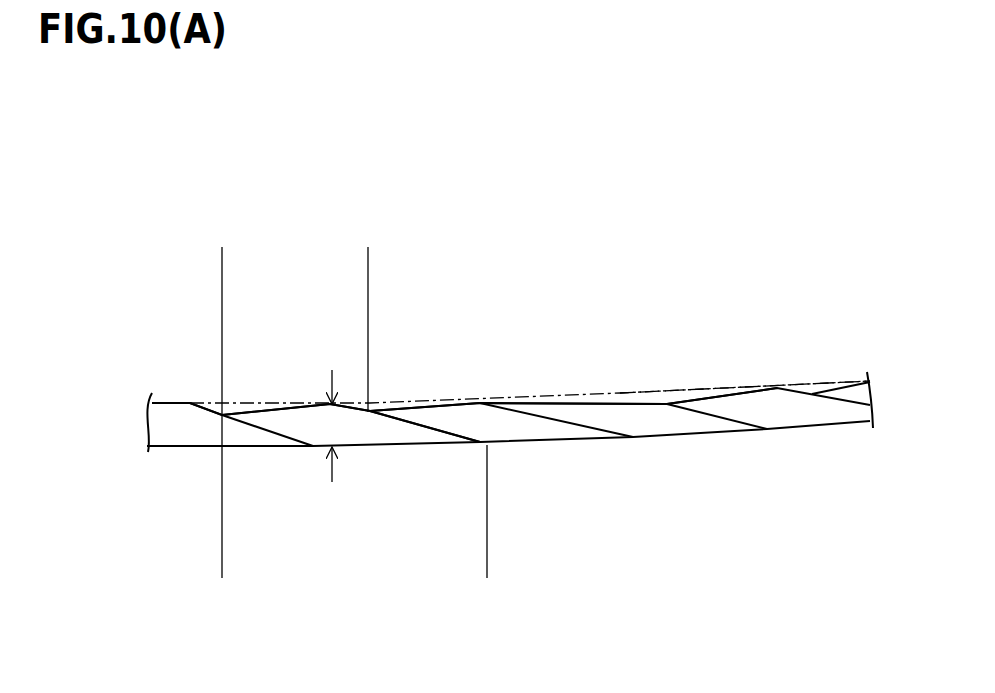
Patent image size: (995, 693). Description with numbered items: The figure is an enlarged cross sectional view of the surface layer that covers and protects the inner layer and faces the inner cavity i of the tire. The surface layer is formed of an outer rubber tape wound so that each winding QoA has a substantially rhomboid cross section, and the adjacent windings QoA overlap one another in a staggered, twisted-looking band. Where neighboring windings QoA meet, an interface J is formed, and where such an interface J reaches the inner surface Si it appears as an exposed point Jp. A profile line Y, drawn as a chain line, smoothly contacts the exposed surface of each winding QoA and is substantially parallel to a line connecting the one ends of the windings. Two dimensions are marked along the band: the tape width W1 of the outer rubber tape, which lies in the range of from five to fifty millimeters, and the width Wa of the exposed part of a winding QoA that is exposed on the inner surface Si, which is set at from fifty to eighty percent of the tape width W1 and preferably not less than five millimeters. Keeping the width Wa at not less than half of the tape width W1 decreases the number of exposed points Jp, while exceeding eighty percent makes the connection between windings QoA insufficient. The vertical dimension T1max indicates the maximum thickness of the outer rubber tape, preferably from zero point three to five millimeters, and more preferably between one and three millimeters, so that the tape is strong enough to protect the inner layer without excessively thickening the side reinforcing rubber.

The inner cavity i is at (570, 234).
The exposed point Jp is at (212, 402).
The winding of the outer rubber tape QoA is at (294, 418).
The interface J is at (440, 430).
The inner surface Si is at (696, 392).
The profile line Y is at (817, 385).
The width of exposed part Wa is at (368, 254).
The tape width W1 is at (487, 573).
The maximum thickness T1max is at (332, 427).